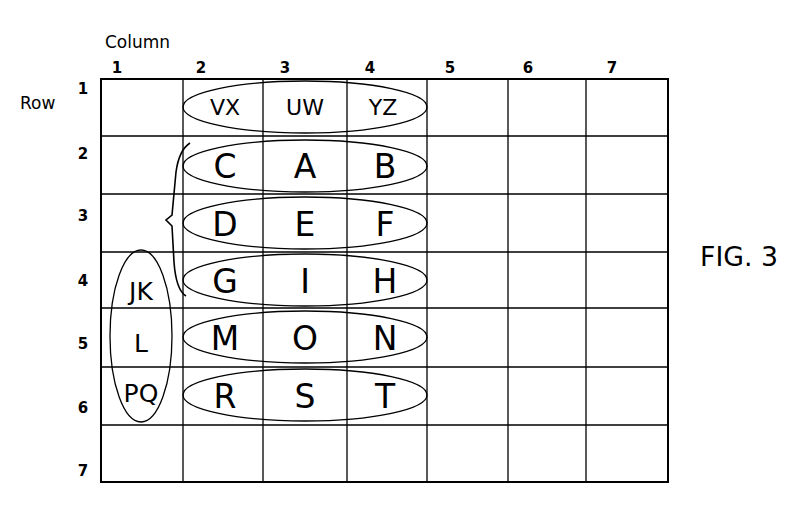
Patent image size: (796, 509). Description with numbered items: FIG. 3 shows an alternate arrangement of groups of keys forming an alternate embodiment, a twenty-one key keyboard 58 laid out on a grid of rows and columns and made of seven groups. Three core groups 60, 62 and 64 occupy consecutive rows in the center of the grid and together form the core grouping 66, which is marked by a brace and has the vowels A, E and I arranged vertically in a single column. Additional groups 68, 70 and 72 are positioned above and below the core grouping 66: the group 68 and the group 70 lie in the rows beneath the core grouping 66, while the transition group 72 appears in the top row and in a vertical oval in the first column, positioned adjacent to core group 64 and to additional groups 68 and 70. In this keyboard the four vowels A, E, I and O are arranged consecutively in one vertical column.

The keyboard 58 is at (687, 168).
The core group 60 is at (412, 167).
The core group 62 is at (412, 223).
The core group 64 is at (412, 280).
The core grouping 66 is at (165, 219).
The additional group 68 is at (412, 337).
The additional group 70 is at (410, 396).
The transition group 72 is at (412, 108).